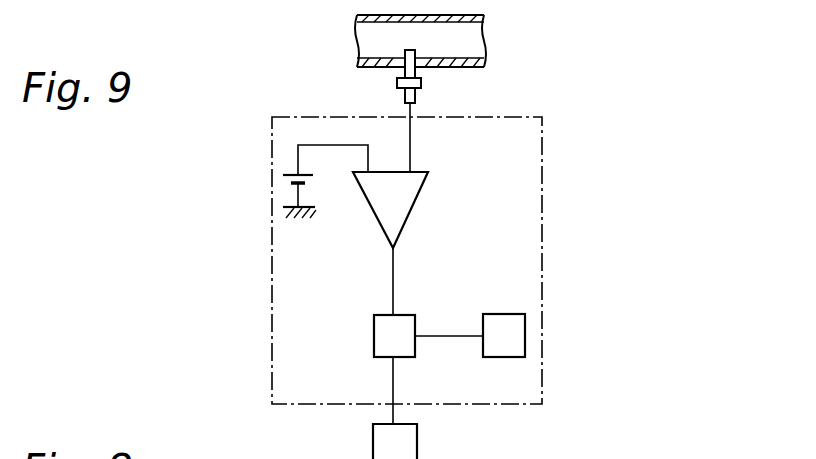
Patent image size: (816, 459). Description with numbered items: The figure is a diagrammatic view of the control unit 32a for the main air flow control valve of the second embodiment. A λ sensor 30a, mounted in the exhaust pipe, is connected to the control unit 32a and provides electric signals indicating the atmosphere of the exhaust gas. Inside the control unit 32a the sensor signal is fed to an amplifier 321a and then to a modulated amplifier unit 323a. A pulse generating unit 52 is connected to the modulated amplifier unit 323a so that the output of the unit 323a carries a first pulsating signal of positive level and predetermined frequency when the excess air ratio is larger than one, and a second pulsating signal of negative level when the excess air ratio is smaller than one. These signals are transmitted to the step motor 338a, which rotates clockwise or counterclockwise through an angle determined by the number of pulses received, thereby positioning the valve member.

The λ sensor 30a is at (415, 70).
The control unit 32a is at (542, 246).
The amplifier 321a is at (407, 203).
The modulated amplifier unit 323a is at (403, 323).
The pulse generating unit 52 is at (518, 337).
The step motor 338a is at (417, 449).